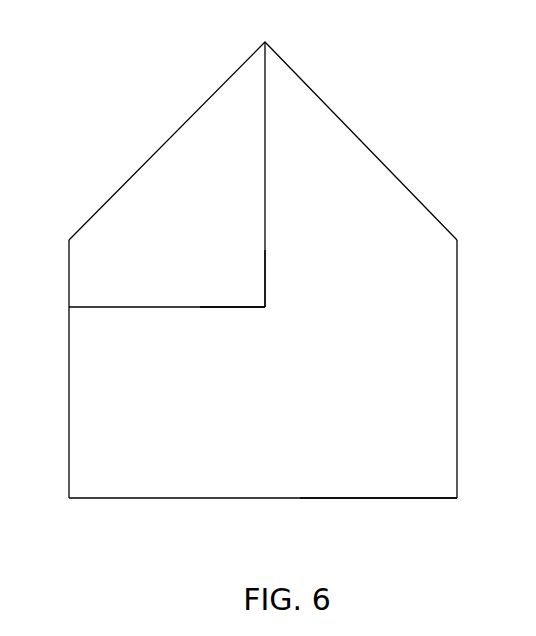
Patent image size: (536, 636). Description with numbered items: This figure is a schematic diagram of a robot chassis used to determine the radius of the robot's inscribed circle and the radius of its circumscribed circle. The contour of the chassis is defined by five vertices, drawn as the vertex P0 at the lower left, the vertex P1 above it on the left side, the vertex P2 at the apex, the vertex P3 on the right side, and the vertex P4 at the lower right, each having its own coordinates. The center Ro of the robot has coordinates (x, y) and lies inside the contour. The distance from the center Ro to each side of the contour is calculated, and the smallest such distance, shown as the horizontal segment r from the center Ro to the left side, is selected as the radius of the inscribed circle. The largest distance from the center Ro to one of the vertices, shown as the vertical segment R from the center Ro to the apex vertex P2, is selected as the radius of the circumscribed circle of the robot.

The vertex p0 of the chassis contour P0 is at (255, 518).
The vertex p1 of the chassis contour P1 is at (46, 365).
The vertex p2 of the chassis contour P2 is at (263, 128).
The vertex p3 of the chassis contour P3 is at (473, 354).
The vertex p4 of the chassis contour P4 is at (395, 510).
The radius of the circumscribed circle R is at (245, 174).
The radius of the inscribed circle r is at (167, 290).
The center of the robot Ro is at (248, 290).